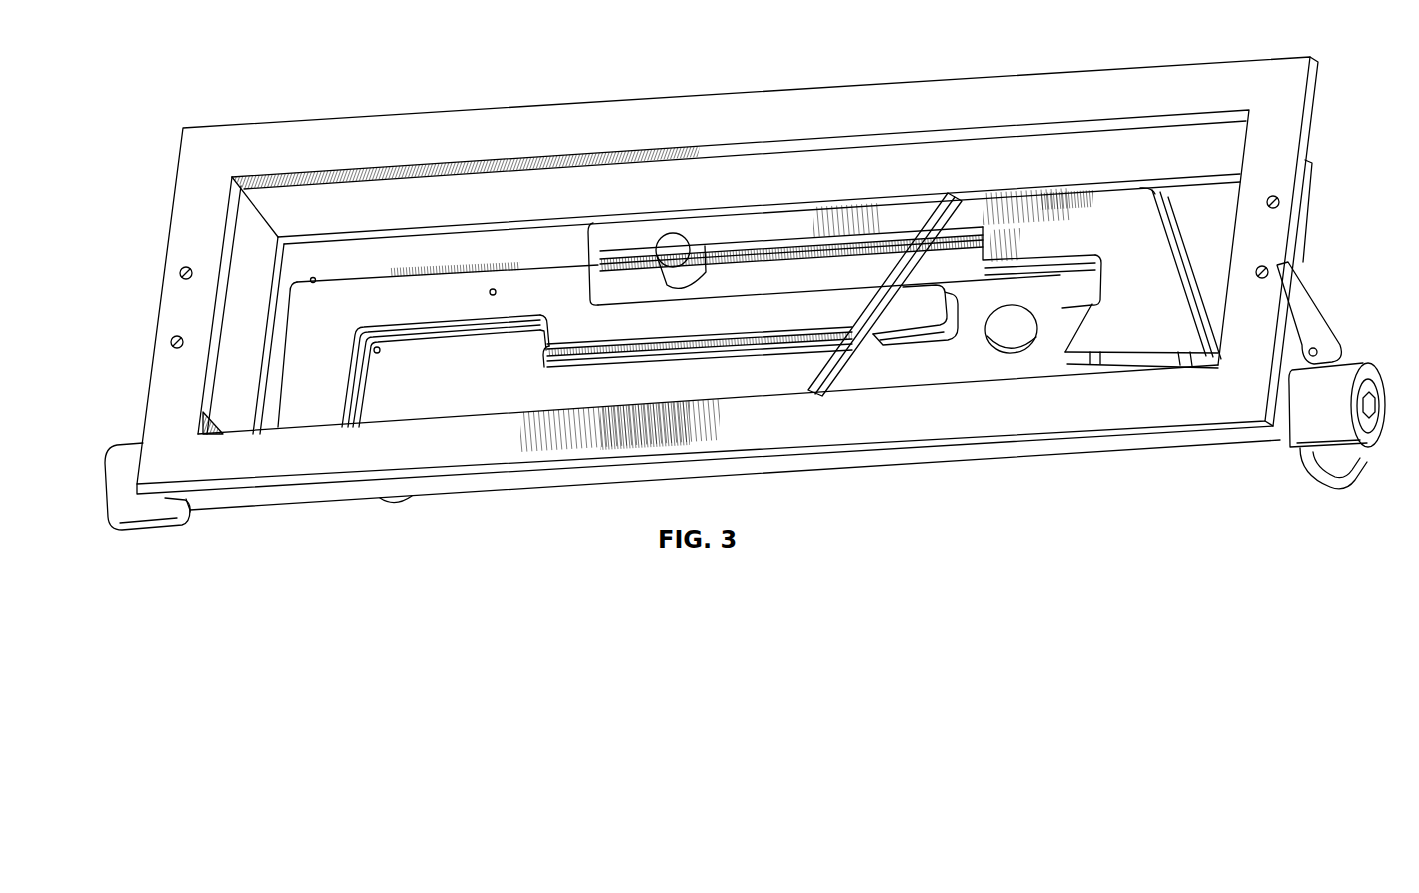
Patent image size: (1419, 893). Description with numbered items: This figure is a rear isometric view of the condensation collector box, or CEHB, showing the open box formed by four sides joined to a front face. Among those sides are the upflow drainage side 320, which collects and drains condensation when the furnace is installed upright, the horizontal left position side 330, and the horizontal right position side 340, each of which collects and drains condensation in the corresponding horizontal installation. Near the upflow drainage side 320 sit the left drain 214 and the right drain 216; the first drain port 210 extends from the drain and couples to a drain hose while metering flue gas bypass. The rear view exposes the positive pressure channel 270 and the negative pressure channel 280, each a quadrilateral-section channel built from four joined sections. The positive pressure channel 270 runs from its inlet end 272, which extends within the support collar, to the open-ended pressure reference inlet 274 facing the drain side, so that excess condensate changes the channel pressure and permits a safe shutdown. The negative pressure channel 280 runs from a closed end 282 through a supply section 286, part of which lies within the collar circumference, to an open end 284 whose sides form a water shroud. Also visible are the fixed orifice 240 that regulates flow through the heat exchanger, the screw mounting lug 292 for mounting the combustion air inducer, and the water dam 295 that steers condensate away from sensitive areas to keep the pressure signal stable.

The horizontal right position side 340 is at (243, 262).
The horizontal left position side 330 is at (1240, 133).
The upflow drainage side 320 is at (556, 407).
The positive pressure channel 270 is at (517, 303).
The pressure reference inlet 274 is at (378, 410).
The closed end 282 is at (590, 237).
The screw mounting lug 292 is at (668, 240).
The water dam 295 is at (832, 385).
The inlet end 272 is at (903, 305).
The fixed orifice 240 is at (993, 350).
The negative pressure channel 280 is at (1190, 212).
The supply section 286 is at (1100, 203).
The open end 284 is at (1140, 352).
The right drain 216 is at (150, 535).
The left drain 214 is at (1378, 437).
The first drain port 210 is at (1333, 495).